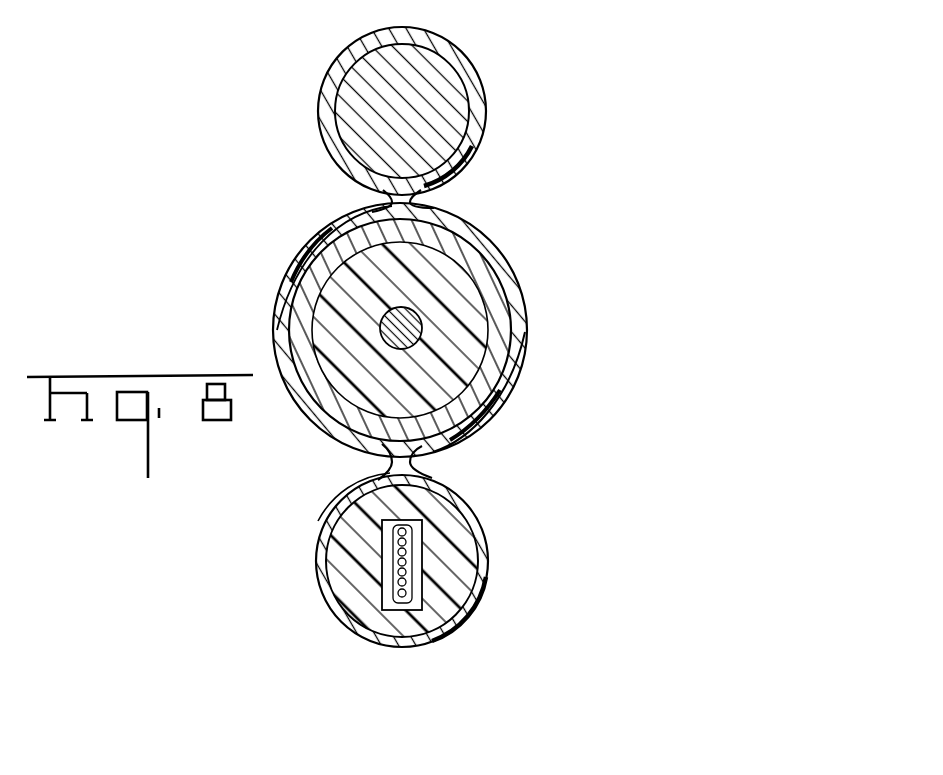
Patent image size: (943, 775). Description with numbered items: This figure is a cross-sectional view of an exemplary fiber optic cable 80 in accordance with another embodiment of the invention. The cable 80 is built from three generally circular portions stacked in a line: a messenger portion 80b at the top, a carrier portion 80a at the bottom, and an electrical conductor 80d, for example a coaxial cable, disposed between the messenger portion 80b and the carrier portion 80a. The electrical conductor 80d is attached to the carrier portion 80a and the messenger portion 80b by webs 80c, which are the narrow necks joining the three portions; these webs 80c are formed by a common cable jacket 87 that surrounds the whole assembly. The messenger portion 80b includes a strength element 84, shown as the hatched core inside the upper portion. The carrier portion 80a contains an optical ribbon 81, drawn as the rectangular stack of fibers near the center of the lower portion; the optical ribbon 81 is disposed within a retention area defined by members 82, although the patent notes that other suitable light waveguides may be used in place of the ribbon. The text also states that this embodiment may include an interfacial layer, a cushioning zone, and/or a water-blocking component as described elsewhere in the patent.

The fiber optic cable 80 is at (296, 146).
The carrier portion 80a is at (455, 582).
The messenger portion 80b is at (453, 105).
The webs 80c is at (413, 197).
The electrical conductor 80d is at (592, 220).
The optical ribbon 81 is at (382, 585).
The members 82 is at (400, 645).
The strength element 84 is at (336, 161).
The common cable jacket 87 is at (330, 514).